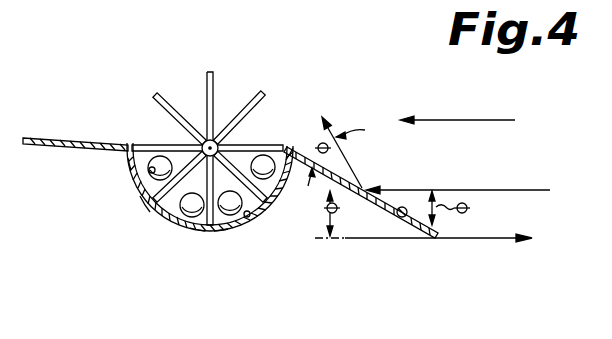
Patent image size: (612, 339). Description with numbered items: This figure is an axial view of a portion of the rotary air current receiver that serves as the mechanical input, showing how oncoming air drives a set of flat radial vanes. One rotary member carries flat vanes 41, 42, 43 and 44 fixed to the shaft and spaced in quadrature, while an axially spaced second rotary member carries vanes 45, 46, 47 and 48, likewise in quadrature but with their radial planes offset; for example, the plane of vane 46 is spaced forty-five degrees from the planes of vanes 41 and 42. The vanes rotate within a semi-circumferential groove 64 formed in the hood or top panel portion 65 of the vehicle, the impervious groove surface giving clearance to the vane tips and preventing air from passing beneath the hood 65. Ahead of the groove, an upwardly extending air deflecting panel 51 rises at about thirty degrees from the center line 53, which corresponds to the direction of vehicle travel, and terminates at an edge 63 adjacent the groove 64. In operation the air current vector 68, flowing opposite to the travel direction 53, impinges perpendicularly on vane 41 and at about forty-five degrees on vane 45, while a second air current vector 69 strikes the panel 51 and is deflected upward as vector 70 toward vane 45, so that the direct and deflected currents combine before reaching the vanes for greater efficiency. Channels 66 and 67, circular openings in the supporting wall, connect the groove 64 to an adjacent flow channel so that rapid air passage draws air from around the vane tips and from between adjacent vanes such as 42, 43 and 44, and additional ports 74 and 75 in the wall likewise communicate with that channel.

The vane 41 is at (210, 70).
The vane 42 is at (154, 145).
The vane 43 is at (197, 233).
The vane 44 is at (270, 144).
The vane 45 is at (263, 93).
The vane 46 is at (156, 94).
The vane 47 is at (148, 213).
The vane 48 is at (268, 215).
The air deflecting panel 51 is at (396, 218).
The center line 53 is at (478, 239).
The edge 63 is at (290, 146).
The groove 64 is at (140, 193).
The hood or top panel portion 65 is at (75, 139).
The channel 66 is at (287, 156).
The channel 67 is at (128, 166).
The air current vector 68 is at (485, 119).
The air current vector 69 is at (512, 189).
The deflected air current vector 70 is at (346, 158).
The port or opening 74 is at (175, 222).
The port or opening 75 is at (220, 235).